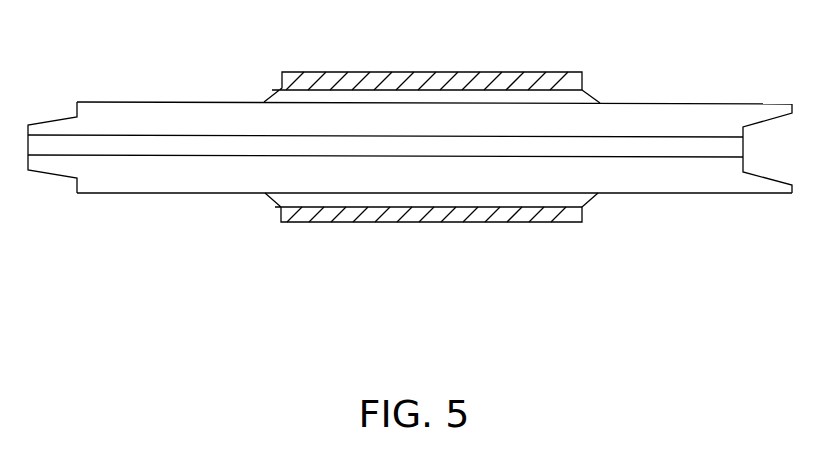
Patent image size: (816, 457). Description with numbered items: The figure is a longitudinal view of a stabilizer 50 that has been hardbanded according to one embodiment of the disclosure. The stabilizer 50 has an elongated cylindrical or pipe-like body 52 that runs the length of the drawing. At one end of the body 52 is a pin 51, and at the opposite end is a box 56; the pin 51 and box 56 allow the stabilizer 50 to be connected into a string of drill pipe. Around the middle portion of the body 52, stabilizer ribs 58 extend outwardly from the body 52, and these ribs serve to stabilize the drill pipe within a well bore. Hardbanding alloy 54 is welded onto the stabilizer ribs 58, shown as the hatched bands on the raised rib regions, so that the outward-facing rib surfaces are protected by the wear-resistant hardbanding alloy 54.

The stabilizer 50 is at (410, 150).
The pin 51 is at (50, 120).
The body 52 is at (173, 193).
The hardbanding alloy 54 is at (350, 223).
The box 56 is at (760, 104).
The stabilizer ribs 58 is at (597, 195).